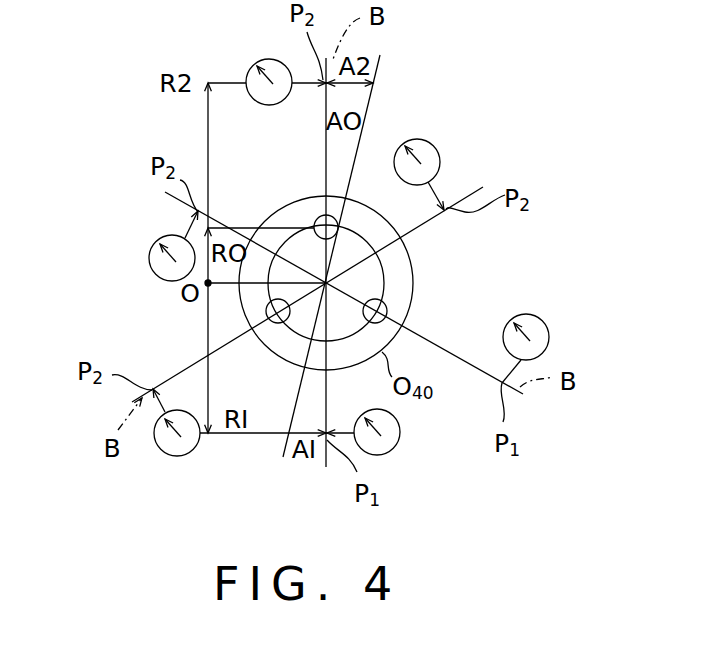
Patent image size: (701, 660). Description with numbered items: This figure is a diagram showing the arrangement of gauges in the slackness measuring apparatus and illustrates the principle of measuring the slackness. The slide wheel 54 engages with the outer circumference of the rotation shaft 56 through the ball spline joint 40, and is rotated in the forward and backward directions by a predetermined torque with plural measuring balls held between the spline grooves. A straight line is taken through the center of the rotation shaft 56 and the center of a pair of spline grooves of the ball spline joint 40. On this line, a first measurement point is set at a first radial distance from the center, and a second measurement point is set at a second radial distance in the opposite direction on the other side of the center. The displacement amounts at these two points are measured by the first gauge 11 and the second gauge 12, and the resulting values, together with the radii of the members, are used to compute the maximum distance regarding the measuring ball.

The first gauge 11 is at (188, 457).
The second gauge 12 is at (267, 58).
The ball spline joint 40 is at (318, 212).
The slide wheel 54 is at (412, 295).
The rotation shaft 56 is at (385, 268).